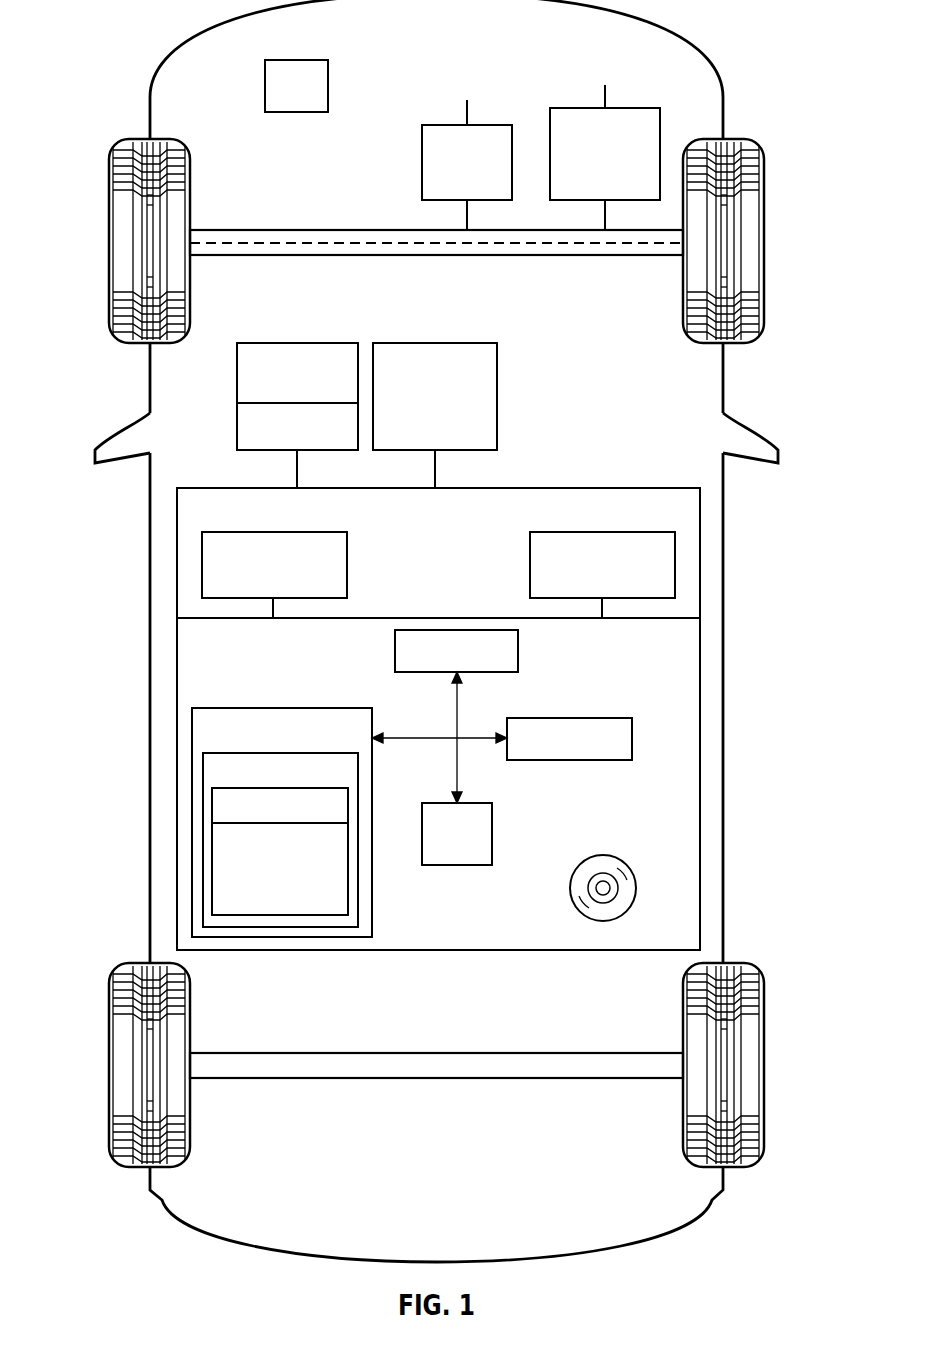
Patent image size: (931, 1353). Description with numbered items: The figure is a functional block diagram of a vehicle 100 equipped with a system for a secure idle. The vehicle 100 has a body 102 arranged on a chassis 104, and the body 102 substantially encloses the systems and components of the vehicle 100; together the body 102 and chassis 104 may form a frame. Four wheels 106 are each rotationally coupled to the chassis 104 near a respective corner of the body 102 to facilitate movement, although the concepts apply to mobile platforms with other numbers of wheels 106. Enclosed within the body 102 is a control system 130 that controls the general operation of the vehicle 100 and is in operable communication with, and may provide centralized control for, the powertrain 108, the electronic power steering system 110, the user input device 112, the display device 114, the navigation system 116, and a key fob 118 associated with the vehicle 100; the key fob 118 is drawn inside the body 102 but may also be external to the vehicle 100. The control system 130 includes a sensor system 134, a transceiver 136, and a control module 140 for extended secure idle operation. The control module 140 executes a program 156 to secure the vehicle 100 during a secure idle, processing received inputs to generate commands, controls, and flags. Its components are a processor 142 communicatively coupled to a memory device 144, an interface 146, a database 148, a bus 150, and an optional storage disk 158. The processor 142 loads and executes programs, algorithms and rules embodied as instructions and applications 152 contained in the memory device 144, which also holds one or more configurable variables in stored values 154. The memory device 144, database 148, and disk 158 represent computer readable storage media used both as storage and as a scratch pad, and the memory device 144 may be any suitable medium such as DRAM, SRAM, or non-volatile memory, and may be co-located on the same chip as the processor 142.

The vehicle 100 is at (147, 50).
The body 102 is at (150, 515).
The chassis 104 is at (297, 230).
The wheels 106 is at (127, 250).
The powertrain 108 is at (624, 169).
The electronic power steering system 110 is at (486, 176).
The user input device 112 is at (237, 383).
The display device 114 is at (237, 428).
The navigation system 116 is at (497, 398).
The key fob 118 is at (265, 87).
The control system 130 is at (573, 488).
The sensor system 134 is at (247, 531).
The transceiver 136 is at (630, 532).
The control module 140 is at (701, 688).
The processor 142 is at (587, 718).
The memory device 144 is at (192, 722).
The interface 146 is at (475, 673).
The database 148 is at (458, 866).
The bus 150 is at (455, 715).
The instructions and applications 152 is at (203, 782).
The stored values 154 is at (212, 872).
The program 156 is at (212, 812).
The storage disk 158 is at (612, 858).